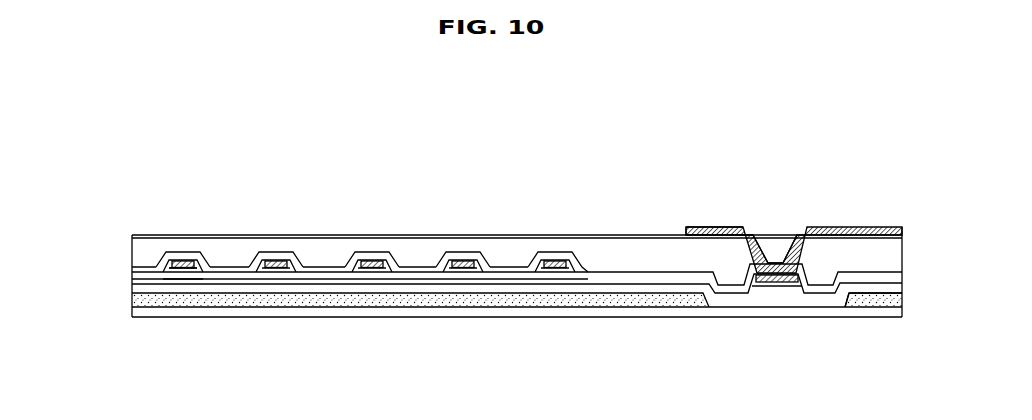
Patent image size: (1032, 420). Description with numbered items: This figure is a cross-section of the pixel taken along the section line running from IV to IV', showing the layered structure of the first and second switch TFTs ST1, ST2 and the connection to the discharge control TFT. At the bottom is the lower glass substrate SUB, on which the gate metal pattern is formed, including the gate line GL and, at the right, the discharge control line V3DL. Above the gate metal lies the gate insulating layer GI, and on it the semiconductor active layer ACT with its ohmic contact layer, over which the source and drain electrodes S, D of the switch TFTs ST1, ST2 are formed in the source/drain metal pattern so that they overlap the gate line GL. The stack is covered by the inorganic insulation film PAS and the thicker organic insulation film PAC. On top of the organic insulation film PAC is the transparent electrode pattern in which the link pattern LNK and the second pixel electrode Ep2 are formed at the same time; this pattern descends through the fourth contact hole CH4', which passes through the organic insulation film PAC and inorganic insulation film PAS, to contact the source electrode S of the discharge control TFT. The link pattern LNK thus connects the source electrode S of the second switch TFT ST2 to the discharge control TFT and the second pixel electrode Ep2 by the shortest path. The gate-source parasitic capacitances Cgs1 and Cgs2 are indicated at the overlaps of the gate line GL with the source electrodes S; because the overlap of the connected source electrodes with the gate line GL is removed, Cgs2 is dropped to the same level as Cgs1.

The first switch TFT ST1 is at (362, 167).
The second switch TFT ST2 is at (585, 167).
The drain electrode D is at (177, 262).
The source electrode S is at (281, 262).
The link pattern LNK is at (716, 226).
The fourth contact hole CH4' is at (775, 210).
The second pixel electrode Ep2 is at (855, 226).
The organic insulation film PAC is at (132, 245).
The inorganic insulation film PAS is at (132, 268).
The gate insulating layer GI is at (132, 283).
The gate line GL is at (132, 298).
The lower glass substrate SUB is at (132, 313).
The line IV is at (130, 333).
The line IV' is at (905, 333).
The semiconductor active layer ACT is at (231, 278).
The gate-source parasitic capacitance of the first switch TFT Cgs1 is at (281, 268).
The gate-source parasitic capacitance of the second switch TFT Cgs2 is at (466, 268).
The discharge control line V3DL is at (860, 298).